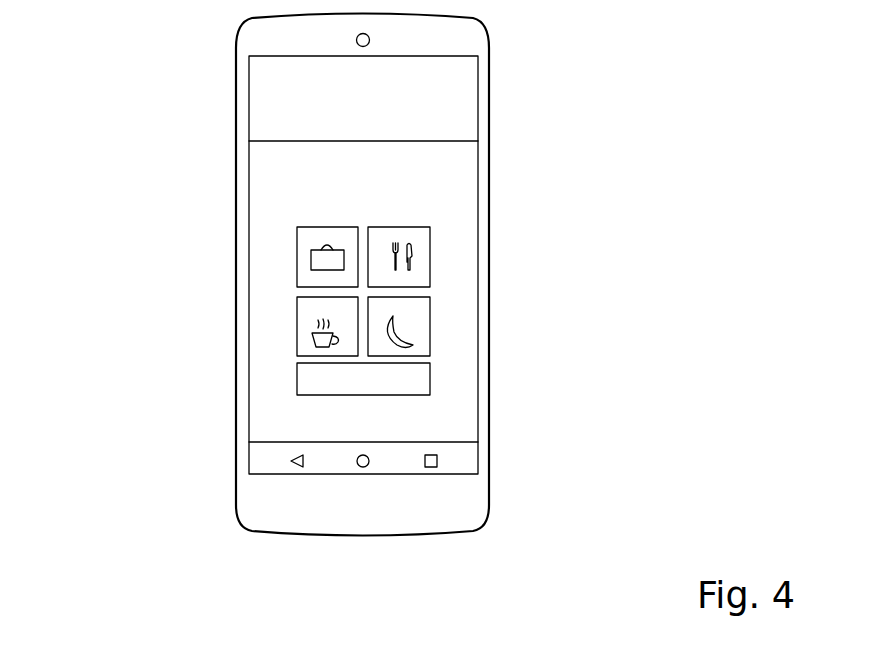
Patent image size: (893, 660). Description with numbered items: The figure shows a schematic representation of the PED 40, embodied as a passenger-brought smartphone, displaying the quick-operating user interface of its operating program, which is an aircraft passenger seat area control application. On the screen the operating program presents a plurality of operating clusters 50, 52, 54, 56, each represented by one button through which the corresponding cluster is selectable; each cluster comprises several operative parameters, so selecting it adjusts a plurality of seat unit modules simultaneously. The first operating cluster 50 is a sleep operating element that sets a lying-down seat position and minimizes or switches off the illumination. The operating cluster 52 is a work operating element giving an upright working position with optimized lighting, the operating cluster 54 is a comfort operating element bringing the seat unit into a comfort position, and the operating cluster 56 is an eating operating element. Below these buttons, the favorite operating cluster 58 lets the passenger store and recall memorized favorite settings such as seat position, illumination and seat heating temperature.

The PED 40 is at (168, 90).
The first operating cluster 50 is at (430, 323).
The operating cluster 52 is at (297, 254).
The operating cluster 54 is at (297, 320).
The operating cluster 56 is at (430, 255).
The favorite operating cluster 58 is at (430, 378).